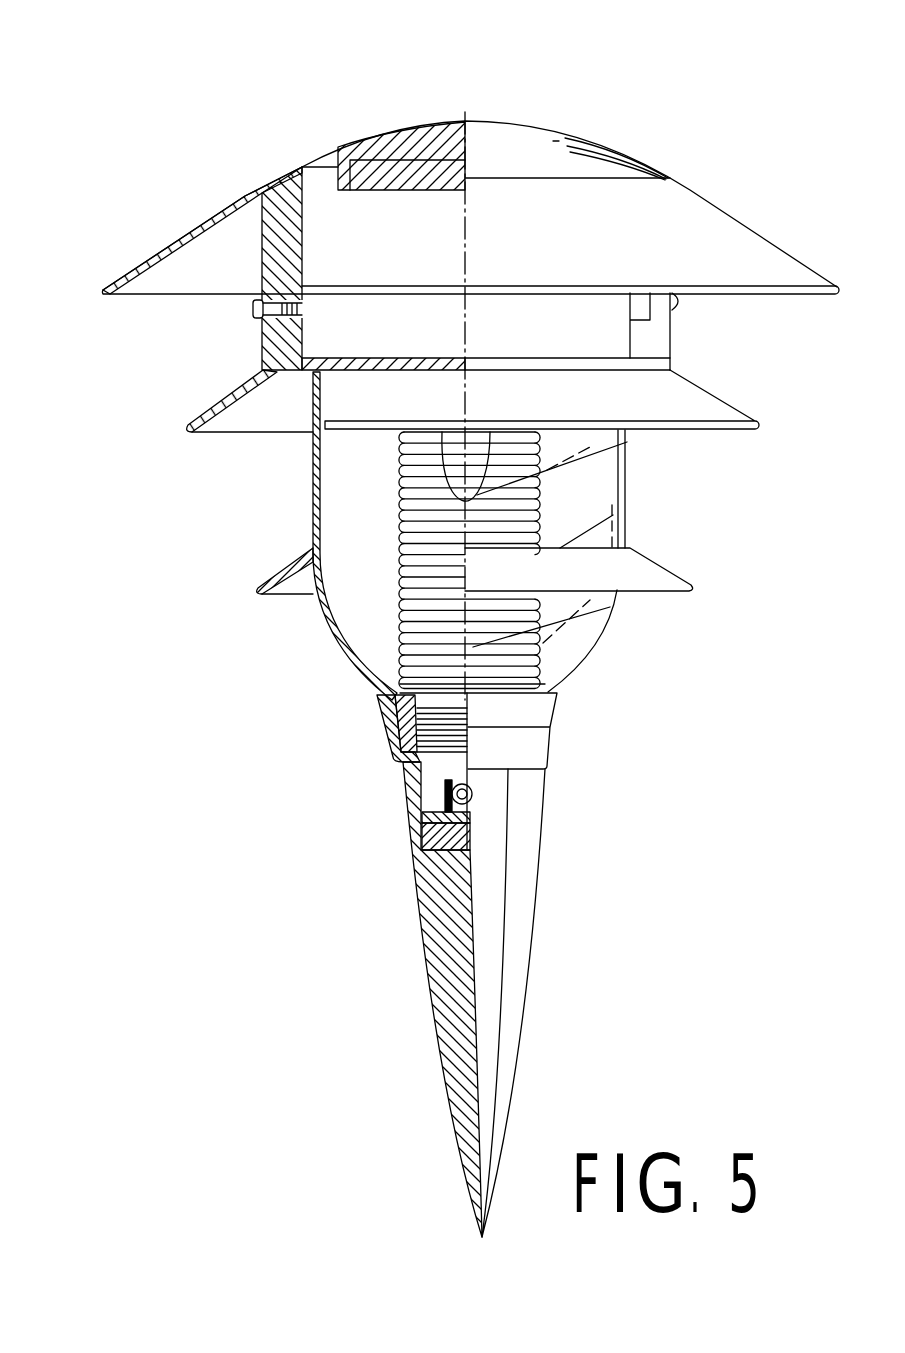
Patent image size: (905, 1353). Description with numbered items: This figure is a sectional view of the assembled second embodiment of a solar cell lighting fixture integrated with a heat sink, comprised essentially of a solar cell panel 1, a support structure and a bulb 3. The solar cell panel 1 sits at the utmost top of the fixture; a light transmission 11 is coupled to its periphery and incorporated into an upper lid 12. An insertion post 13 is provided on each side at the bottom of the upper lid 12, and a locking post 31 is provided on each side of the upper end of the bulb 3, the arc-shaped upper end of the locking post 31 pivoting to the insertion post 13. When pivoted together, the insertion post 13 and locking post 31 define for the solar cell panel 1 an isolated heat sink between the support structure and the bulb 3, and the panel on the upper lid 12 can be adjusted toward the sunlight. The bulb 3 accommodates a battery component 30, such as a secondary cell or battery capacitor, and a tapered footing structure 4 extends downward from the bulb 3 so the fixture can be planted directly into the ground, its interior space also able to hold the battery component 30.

The solar cell panel 1 is at (450, 125).
The light transmission 11 is at (432, 125).
The upper lid 12 is at (263, 172).
The insertion post 13 is at (273, 247).
The bulb 3 is at (313, 530).
The battery component 30 is at (445, 795).
The locking post 31 is at (278, 338).
The tapered footing structure 4 is at (438, 947).